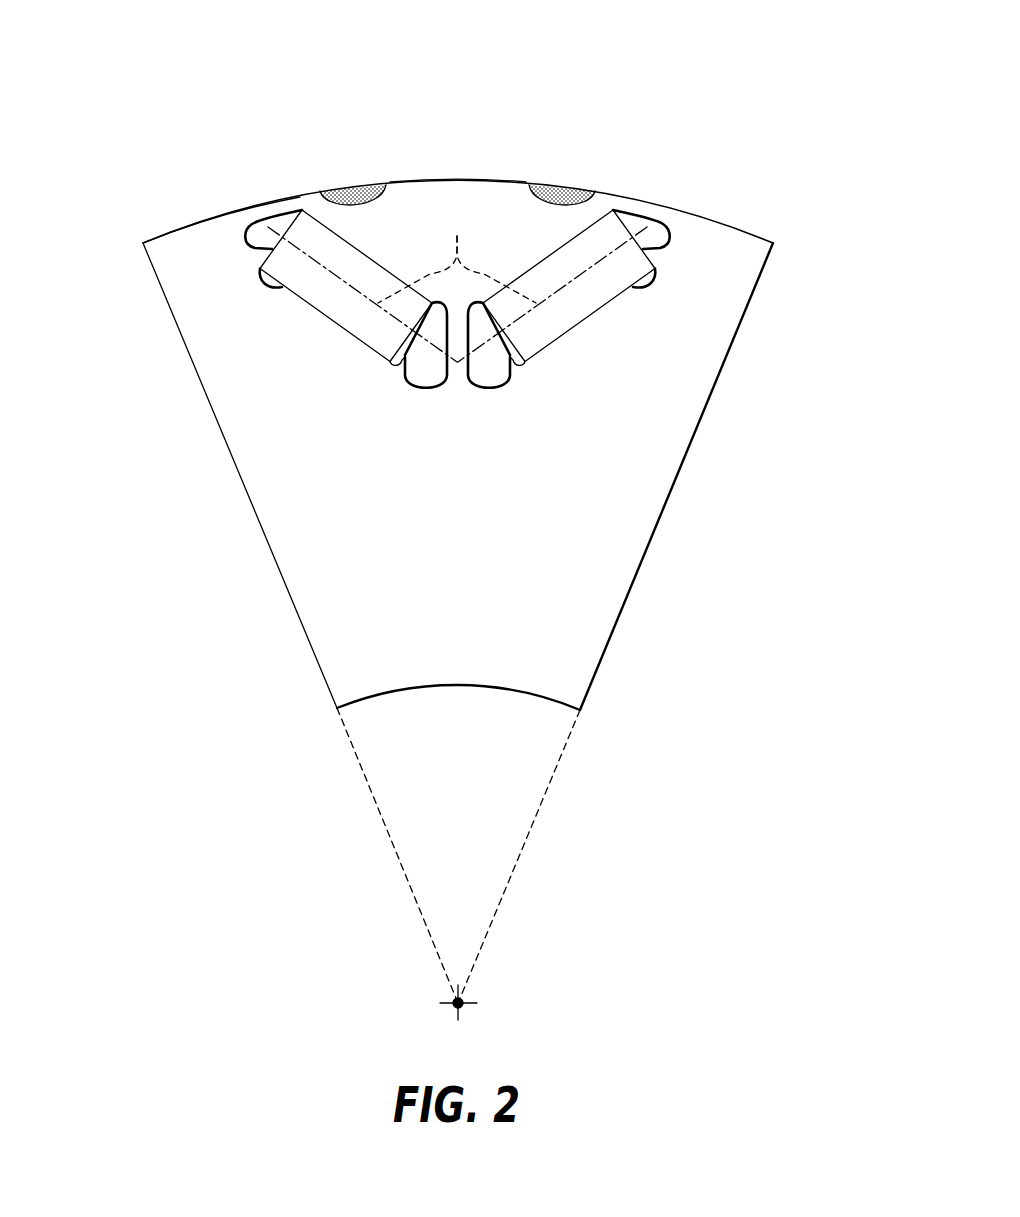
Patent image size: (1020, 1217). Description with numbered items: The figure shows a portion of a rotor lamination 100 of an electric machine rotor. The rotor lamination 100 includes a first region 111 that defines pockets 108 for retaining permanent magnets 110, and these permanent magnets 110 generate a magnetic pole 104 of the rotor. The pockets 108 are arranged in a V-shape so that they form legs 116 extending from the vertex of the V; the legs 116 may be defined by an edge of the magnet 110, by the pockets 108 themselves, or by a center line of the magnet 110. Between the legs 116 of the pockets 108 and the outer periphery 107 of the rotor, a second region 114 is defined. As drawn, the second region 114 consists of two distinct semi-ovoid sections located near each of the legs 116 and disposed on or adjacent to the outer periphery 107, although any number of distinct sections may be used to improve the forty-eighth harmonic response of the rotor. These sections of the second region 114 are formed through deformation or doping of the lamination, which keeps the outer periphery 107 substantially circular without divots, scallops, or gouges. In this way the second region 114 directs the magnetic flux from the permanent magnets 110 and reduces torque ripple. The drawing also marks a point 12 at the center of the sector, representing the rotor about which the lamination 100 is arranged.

The rotor lamination 100 is at (575, 72).
The magnetic pole 104 is at (463, 179).
The outer periphery 107 is at (155, 240).
The pockets 108 is at (258, 232).
The permanent magnets 110 is at (333, 295).
The first region 111 is at (350, 628).
The second region 114 is at (353, 196).
The legs 116 is at (457, 255).
The rotation axis 12 is at (464, 996).